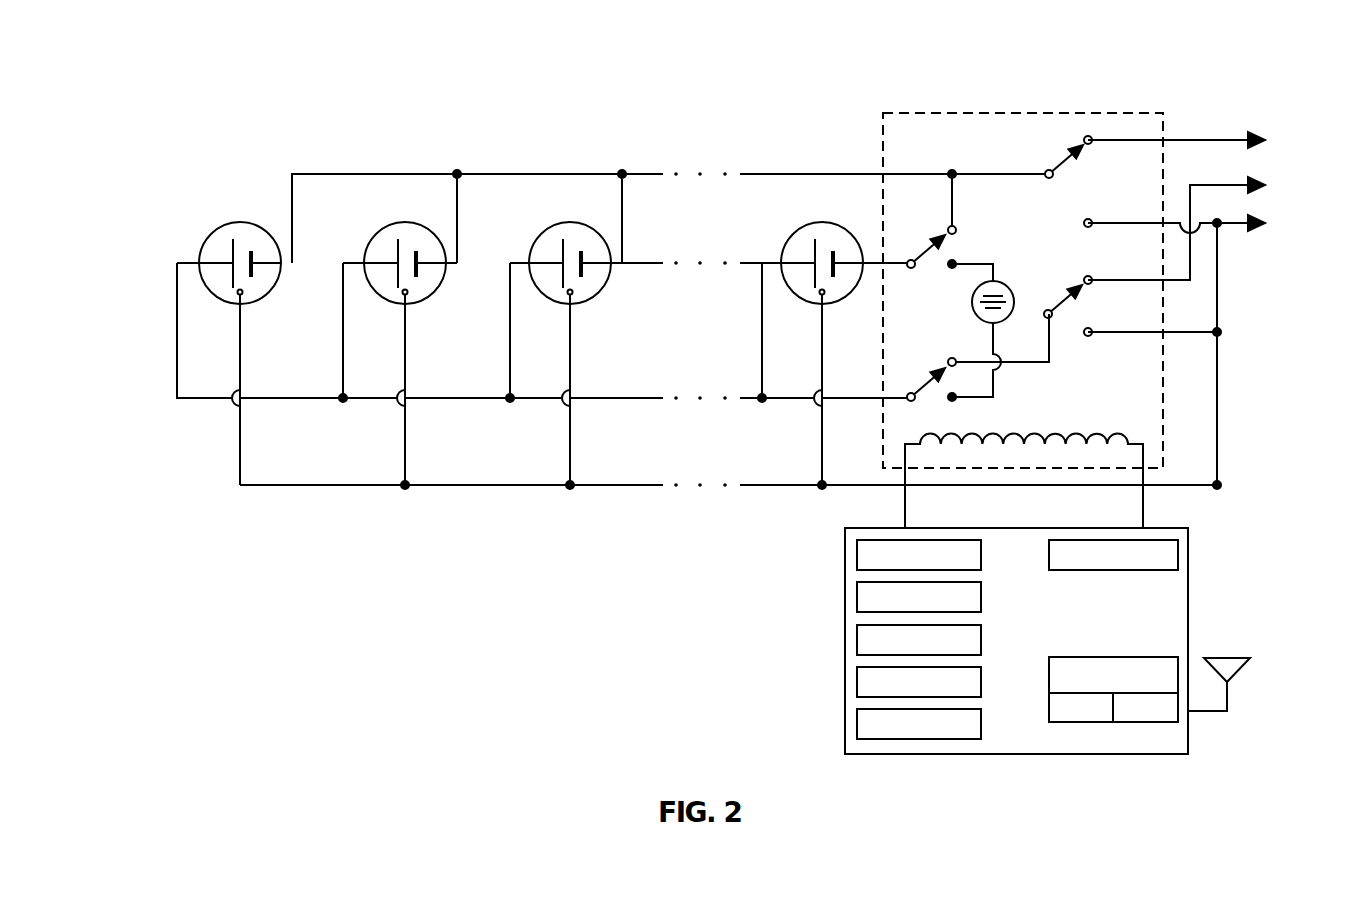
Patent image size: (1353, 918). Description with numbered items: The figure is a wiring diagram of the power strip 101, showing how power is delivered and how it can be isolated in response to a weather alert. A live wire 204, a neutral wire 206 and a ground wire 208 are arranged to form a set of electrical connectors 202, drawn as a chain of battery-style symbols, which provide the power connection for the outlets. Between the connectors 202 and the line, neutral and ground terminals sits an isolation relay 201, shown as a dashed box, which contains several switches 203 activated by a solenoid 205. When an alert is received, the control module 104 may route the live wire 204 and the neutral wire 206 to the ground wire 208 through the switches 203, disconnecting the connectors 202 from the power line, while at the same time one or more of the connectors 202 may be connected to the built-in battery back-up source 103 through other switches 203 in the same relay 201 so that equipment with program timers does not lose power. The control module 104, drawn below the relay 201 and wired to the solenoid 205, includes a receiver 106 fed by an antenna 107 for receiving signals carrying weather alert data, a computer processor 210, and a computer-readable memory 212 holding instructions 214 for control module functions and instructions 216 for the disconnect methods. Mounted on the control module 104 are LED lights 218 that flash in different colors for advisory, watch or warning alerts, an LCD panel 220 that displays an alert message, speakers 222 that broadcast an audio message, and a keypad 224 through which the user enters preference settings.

The power strip 101 is at (710, 65).
The built-in battery back-up source 103 is at (1014, 300).
The control module 104 is at (1098, 754).
The receiver 106 is at (857, 552).
The antenna 107 is at (1237, 660).
The isolation relay 201 is at (918, 113).
The electrical connectors 202 is at (240, 222).
The switches 203 is at (1063, 162).
The live wire 204 is at (1210, 140).
The solenoid 205 is at (1073, 433).
The neutral wire 206 is at (1218, 184).
The ground wire 208 is at (1235, 226).
The computer processor 210 is at (1101, 570).
The computer-readable memory 212 is at (1093, 657).
The instructions 214 is at (1081, 707).
The instructions 216 is at (1145, 707).
The LED lights 218 is at (857, 594).
The LCD panel 220 is at (857, 637).
The speakers 222 is at (857, 680).
The keypad 224 is at (857, 722).